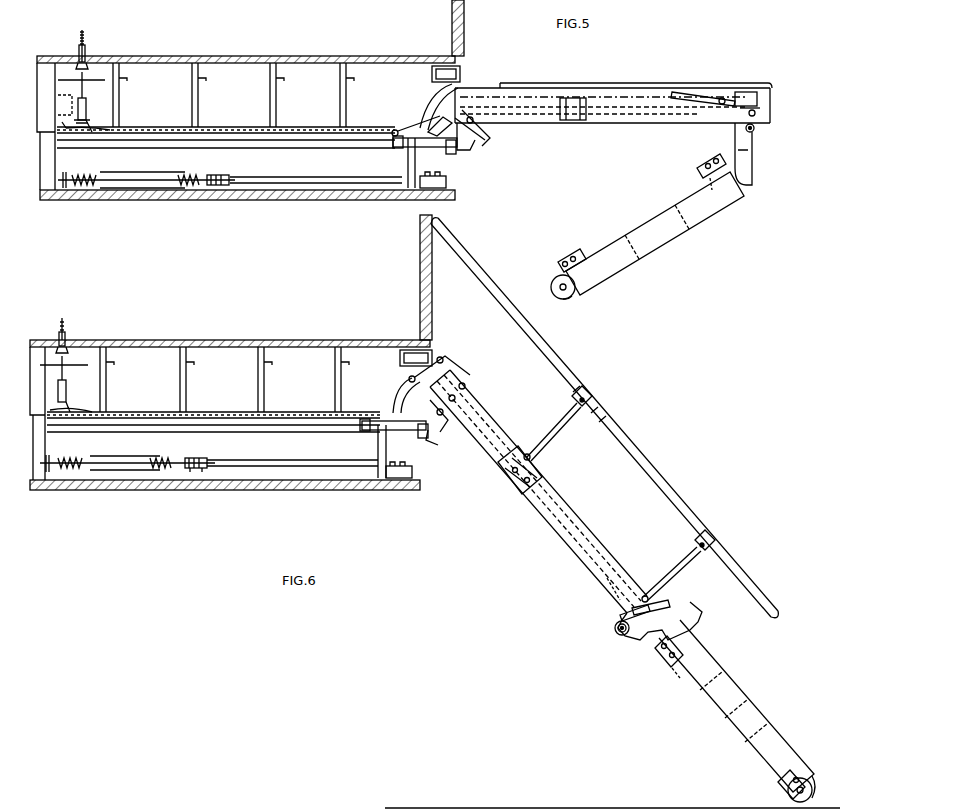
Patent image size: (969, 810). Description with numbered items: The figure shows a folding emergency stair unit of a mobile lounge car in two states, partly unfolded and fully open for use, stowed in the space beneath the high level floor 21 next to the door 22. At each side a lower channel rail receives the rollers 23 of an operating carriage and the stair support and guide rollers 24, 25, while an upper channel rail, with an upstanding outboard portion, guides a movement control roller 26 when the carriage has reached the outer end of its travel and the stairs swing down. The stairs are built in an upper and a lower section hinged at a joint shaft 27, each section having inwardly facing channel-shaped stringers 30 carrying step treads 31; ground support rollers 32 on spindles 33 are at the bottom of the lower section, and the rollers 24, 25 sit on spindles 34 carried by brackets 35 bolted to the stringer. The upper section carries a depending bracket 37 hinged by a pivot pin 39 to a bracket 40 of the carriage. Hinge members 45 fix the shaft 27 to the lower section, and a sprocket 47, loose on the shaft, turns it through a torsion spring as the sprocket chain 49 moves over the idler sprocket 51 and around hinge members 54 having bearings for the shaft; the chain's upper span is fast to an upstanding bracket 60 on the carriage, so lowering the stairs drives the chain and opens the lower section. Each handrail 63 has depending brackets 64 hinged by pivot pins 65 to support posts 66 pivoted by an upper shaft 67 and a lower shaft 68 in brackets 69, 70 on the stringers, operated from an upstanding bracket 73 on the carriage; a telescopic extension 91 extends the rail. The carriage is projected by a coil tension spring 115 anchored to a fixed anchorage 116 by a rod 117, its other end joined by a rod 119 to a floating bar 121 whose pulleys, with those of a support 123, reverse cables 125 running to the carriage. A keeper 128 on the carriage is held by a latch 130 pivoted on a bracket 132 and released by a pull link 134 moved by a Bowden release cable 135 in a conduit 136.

In FIG. 5, the high level floor 21 is at (300, 50).
In FIG. 6, the high level floor 21 is at (261, 340).
In FIG. 5, the door 22 is at (464, 33).
In FIG. 6, the door 22 is at (420, 295).
In FIG. 5, the rollers 23 is at (396, 148).
In FIG. 6, the rollers 23 is at (366, 431).
In FIG. 5, the stair support and guide roller 24 is at (710, 162).
In FIG. 6, the stair support and guide roller 24 is at (660, 652).
In FIG. 5, the stair support and guide roller 25 is at (552, 284).
In FIG. 6, the stair support and guide roller 25 is at (788, 796).
In FIG. 5, the movement control roller 26 is at (398, 130).
In FIG. 6, the movement control roller 26 is at (409, 378).
In FIG. 5, the joint shaft 27 is at (756, 130).
In FIG. 6, the joint shaft 27 is at (622, 635).
In FIG. 5, the stringers 30 is at (665, 194).
In FIG. 6, the stringers 30 is at (602, 550).
In FIG. 5, the step treads 31 is at (684, 225).
In FIG. 6, the step treads 31 is at (757, 720).
In FIG. 5, the ground support rollers 32 is at (566, 298).
In FIG. 6, the ground support rollers 32 is at (812, 776).
In FIG. 5, the spindles 33 is at (556, 297).
In FIG. 6, the spindles 33 is at (800, 790).
In FIG. 5, the spindle 34 is at (730, 160).
In FIG. 5, the bracket 35 is at (700, 170).
In FIG. 6, the bracket 35 is at (677, 674).
In FIG. 5, the depending bracket 37 is at (480, 128).
In FIG. 6, the depending bracket 37 is at (444, 416).
In FIG. 5, the pivot pin 39 is at (484, 140).
In FIG. 6, the pivot pin 39 is at (446, 428).
In FIG. 5, the bracket 40 is at (472, 152).
In FIG. 6, the bracket 40 is at (434, 446).
In FIG. 5, the hinge members 45 is at (752, 175).
In FIG. 6, the hinge members 45 is at (688, 630).
In FIG. 5, the sprocket 47 is at (752, 132).
In FIG. 6, the sprocket 47 is at (618, 629).
In FIG. 5, the sprocket chain 49 is at (632, 97).
In FIG. 6, the sprocket chain 49 is at (572, 514).
In FIG. 6, the lower idler guide sprocket 51 is at (552, 530).
In FIG. 5, the hinge members 54 is at (760, 97).
In FIG. 6, the hinge members 54 is at (665, 612).
In FIG. 6, the upstanding bracket 60 is at (466, 386).
In FIG. 5, the handrail 63 is at (700, 83).
In FIG. 6, the handrail 63 is at (640, 452).
In FIG. 6, the depending brackets 64 is at (580, 396).
In FIG. 6, the pivot pins 65 is at (585, 405).
In FIG. 5, the support posts 66 is at (688, 107).
In FIG. 6, the support posts 66 is at (556, 432).
In FIG. 6, the upper shaft 67 is at (528, 454).
In FIG. 6, the lower shaft 68 is at (646, 595).
In FIG. 5, the upper bracket 69 is at (568, 121).
In FIG. 6, the upper bracket 69 is at (506, 475).
In FIG. 5, the lower bracket 70 is at (758, 114).
In FIG. 6, the lower bracket 70 is at (620, 616).
In FIG. 6, the upstanding bracket 73 is at (456, 398).
In FIG. 6, the telescopic extension 91 is at (475, 266).
In FIG. 5, the coil tension spring 115 is at (90, 188).
In FIG. 6, the coil tension spring 115 is at (76, 472).
In FIG. 5, the fixed anchorage 116 is at (66, 190).
In FIG. 6, the fixed anchorage 116 is at (50, 474).
In FIG. 5, the rod 117 is at (70, 178).
In FIG. 6, the rod 117 is at (58, 462).
In FIG. 5, the rod 119 is at (197, 188).
In FIG. 6, the rod 119 is at (178, 452).
In FIG. 5, the floating bar 121 is at (220, 188).
In FIG. 6, the floating bar 121 is at (200, 458).
In FIG. 5, the support 123 is at (446, 182).
In FIG. 6, the support 123 is at (412, 476).
In FIG. 5, the cables 125 is at (335, 190).
In FIG. 6, the cables 125 is at (262, 455).
In FIG. 5, the keeper 128 is at (428, 130).
In FIG. 5, the latch 130 is at (92, 132).
In FIG. 6, the latch 130 is at (72, 413).
In FIG. 5, the bracket 132 is at (55, 105).
In FIG. 5, the pull link 134 is at (88, 126).
In FIG. 5, the Bowden release cable 135 is at (84, 31).
In FIG. 5, the conduit 136 is at (86, 50).